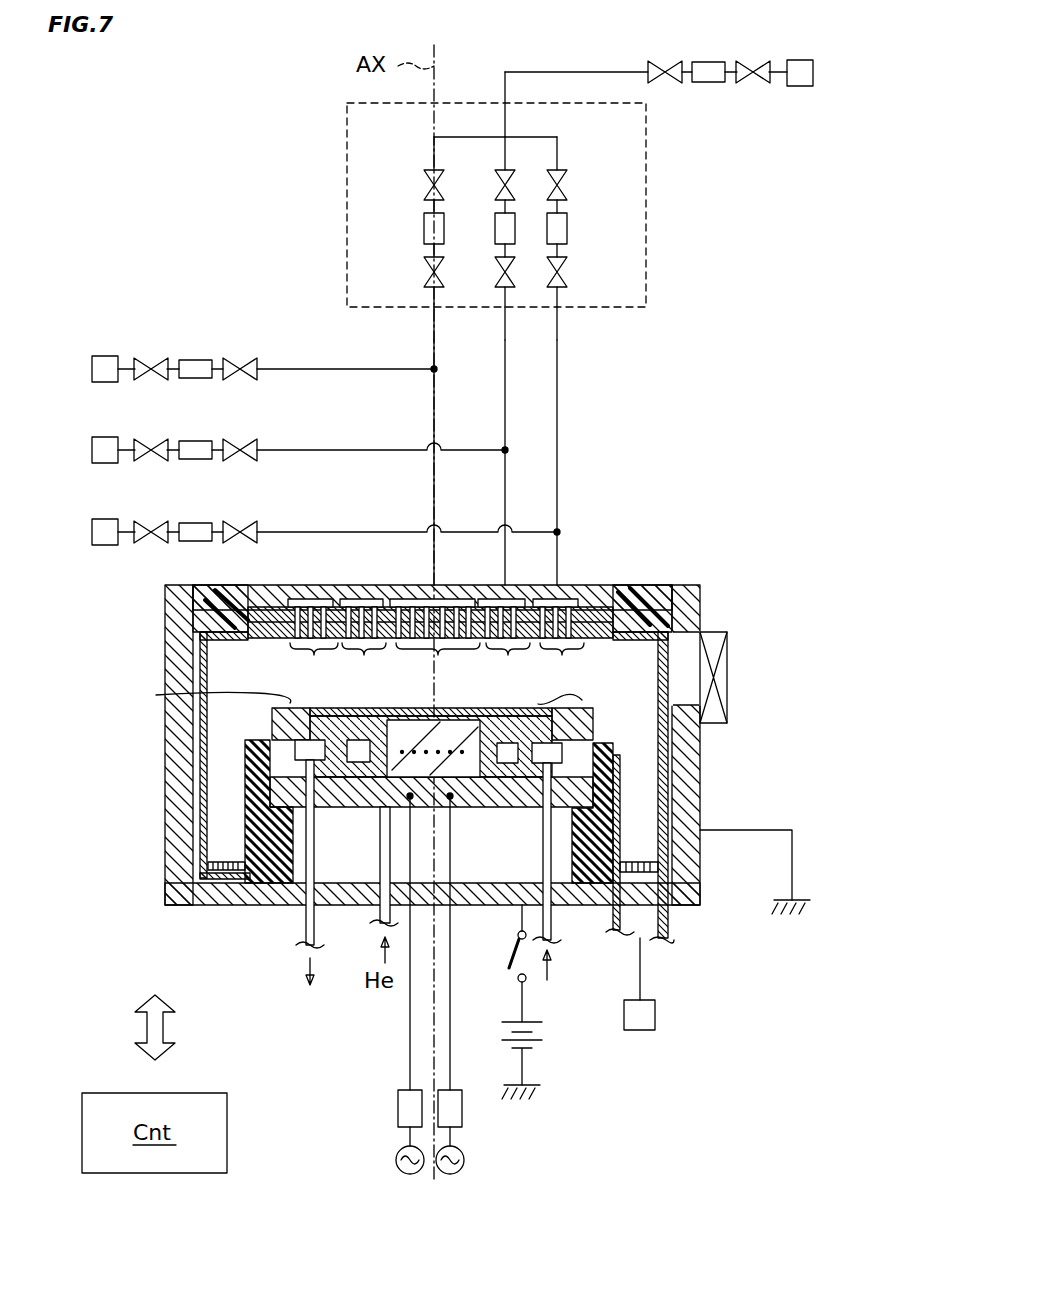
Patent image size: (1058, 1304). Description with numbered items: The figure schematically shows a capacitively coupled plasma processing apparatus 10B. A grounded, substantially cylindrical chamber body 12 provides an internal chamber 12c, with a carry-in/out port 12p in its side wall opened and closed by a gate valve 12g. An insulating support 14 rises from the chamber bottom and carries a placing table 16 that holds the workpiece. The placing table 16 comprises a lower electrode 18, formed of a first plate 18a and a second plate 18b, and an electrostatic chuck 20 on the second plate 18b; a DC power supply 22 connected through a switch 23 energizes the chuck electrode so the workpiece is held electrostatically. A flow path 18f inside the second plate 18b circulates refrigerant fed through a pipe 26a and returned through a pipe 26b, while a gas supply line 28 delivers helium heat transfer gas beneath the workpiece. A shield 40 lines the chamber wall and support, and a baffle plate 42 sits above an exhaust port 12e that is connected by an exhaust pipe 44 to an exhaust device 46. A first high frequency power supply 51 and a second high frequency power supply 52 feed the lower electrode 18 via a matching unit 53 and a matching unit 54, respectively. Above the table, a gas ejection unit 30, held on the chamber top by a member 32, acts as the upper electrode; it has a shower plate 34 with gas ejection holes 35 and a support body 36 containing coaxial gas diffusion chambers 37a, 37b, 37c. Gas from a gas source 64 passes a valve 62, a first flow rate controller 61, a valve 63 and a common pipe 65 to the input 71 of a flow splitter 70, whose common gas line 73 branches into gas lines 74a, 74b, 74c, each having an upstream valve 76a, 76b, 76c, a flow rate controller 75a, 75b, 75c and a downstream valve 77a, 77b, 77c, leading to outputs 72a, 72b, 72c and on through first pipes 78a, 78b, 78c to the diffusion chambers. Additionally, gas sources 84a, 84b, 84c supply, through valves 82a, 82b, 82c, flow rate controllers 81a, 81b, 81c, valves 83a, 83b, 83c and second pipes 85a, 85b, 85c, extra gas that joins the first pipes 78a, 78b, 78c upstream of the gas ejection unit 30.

The plasma processing apparatus 10B is at (170, 150).
The chamber body 12 is at (444, 759).
The chamber 12c is at (230, 679).
The exhaust port 12e is at (643, 895).
The gate valve 12g is at (727, 650).
The carry-in/out port 12p is at (686, 688).
The support 14 is at (612, 742).
The placing table 16 is at (322, 781).
The lower electrode 18 is at (345, 781).
The first plate 18a is at (290, 772).
The second plate 18b is at (296, 735).
The flow path 18f is at (320, 742).
The electrostatic chuck 20 is at (292, 714).
The DC power supply 22 is at (548, 1038).
The switch 23 is at (504, 956).
The pipe 26a is at (556, 940).
The pipe 26b is at (306, 928).
The gas supply line 28 is at (378, 875).
The gas ejection unit 30 is at (440, 563).
The member 32 is at (650, 604).
The shower plate 34 is at (596, 616).
The gas ejection holes 35 is at (558, 630).
The support body 36 is at (622, 596).
The gas diffusion chamber 37a is at (412, 600).
The gas diffusion chamber 37b is at (362, 600).
The gas diffusion chamber 37c is at (310, 600).
The shield 40 is at (276, 718).
The baffle plate 42 is at (216, 879).
The exhaust pipe 44 is at (668, 925).
The exhaust device 46 is at (655, 1015).
The first high frequency power supply 51 is at (396, 1160).
The second high frequency power supply 52 is at (464, 1160).
The matching unit 53 is at (398, 1114).
The matching unit 54 is at (462, 1114).
The first flow rate controller 61 is at (708, 62).
The valve 62 is at (758, 64).
The valve 63 is at (668, 64).
The gas source 64 is at (800, 86).
The common pipe 65 is at (596, 72).
The flow splitter 70 is at (646, 125).
The input 71 is at (506, 104).
The output 72a is at (432, 306).
The output 72b is at (502, 306).
The output 72c is at (557, 310).
The common gas line 73 is at (506, 122).
The gas line 74a is at (434, 141).
The gas line 74b is at (506, 142).
The gas line 74c is at (557, 141).
The flow rate controller 75a is at (424, 228).
The flow rate controller 75b is at (496, 227).
The flow rate controller 75c is at (567, 228).
The valve 76a is at (424, 186).
The valve 76b is at (496, 182).
The valve 76c is at (567, 182).
The valve 77a is at (424, 274).
The valve 77b is at (496, 272).
The valve 77c is at (567, 270).
The first pipe 78a is at (432, 400).
The first pipe 78b is at (504, 376).
The first pipe 78c is at (557, 395).
The flow rate controller 81a is at (196, 360).
The flow rate controller 81b is at (196, 442).
The flow rate controller 81c is at (196, 524).
The valve 82a is at (152, 360).
The valve 82b is at (152, 442).
The valve 82c is at (152, 524).
The valve 83a is at (242, 360).
The valve 83b is at (242, 442).
The valve 83c is at (242, 524).
The gas source 84a is at (92, 370).
The gas source 84b is at (92, 451).
The gas source 84c is at (92, 533).
The second pipe 85a is at (310, 368).
The second pipe 85b is at (310, 449).
The second pipe 85c is at (310, 531).